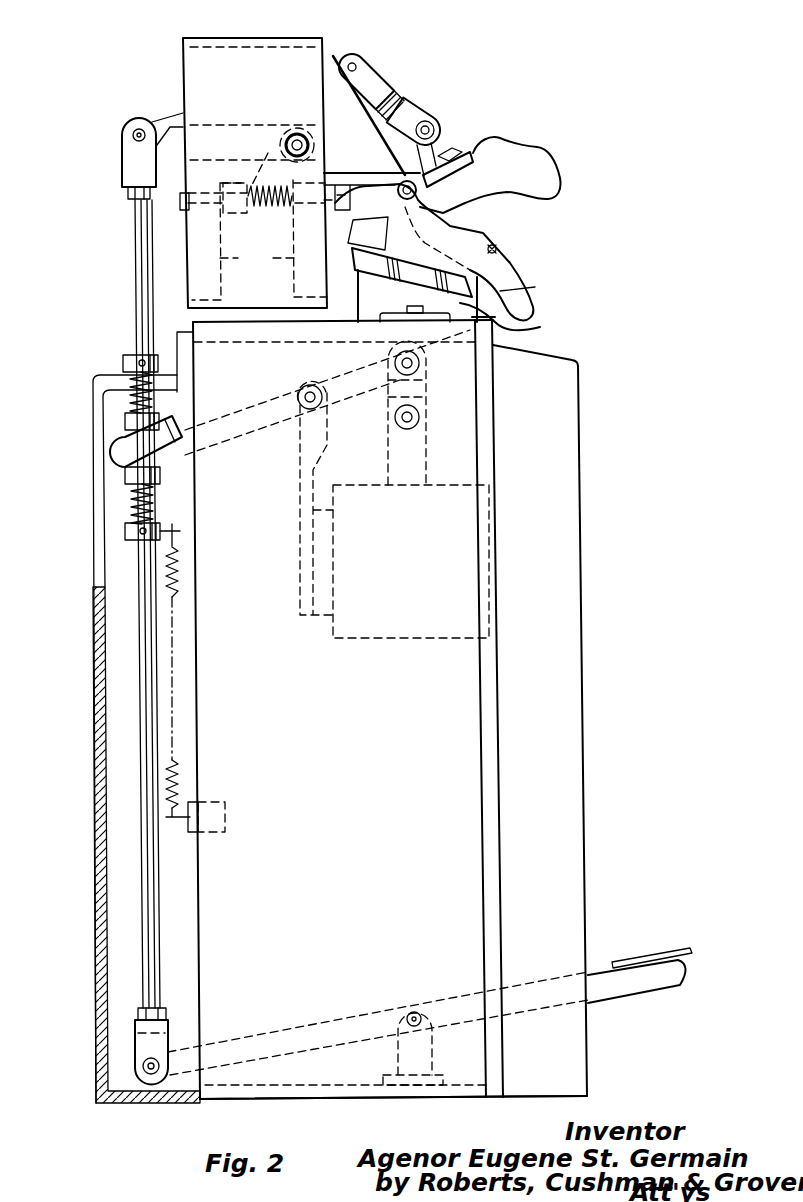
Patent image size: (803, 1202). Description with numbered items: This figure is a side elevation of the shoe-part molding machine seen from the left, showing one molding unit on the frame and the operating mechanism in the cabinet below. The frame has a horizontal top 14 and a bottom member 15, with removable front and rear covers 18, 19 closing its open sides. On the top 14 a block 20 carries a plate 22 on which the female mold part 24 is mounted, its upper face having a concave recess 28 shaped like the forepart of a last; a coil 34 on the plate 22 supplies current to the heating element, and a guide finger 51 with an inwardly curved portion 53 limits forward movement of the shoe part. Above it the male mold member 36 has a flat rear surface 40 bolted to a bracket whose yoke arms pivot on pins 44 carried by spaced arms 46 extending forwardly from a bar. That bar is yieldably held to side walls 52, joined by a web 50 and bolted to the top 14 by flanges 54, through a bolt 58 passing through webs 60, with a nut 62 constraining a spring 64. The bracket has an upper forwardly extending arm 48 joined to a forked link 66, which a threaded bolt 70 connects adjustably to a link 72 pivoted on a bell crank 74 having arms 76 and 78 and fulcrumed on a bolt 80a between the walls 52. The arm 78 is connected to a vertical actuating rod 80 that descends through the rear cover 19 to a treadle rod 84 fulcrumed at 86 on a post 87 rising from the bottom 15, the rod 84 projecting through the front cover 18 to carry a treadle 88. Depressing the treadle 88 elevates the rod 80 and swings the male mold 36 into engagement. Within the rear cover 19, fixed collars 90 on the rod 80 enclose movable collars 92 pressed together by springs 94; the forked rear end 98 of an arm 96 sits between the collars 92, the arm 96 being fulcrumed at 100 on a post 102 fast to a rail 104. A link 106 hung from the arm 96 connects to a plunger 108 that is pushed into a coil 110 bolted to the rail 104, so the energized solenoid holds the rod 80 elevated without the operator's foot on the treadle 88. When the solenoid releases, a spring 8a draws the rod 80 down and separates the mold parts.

The horizontal top 14 is at (193, 328).
The bottom member 15 is at (263, 1097).
The front cover 18 is at (568, 395).
The rear cover 19 is at (95, 657).
The block 20 is at (540, 327).
The plate 22 is at (536, 288).
The female mold part 24 is at (536, 285).
The recess 28 is at (498, 256).
The coil 34 is at (353, 220).
The male mold member 36 is at (518, 148).
The flat rear surface 40 is at (475, 150).
The pins 44 is at (430, 150).
The spaced arms 46 is at (352, 173).
The upper forwardly extending arm 48 is at (403, 181).
The web 50 is at (268, 38).
The guide finger 51 is at (492, 244).
The side walls 52 is at (185, 80).
The inwardly curved portion 53 is at (555, 203).
The flanges 54 is at (243, 318).
The bolt 58 is at (247, 157).
The webs 60 is at (257, 240).
The nut 62 is at (185, 170).
The spring 64 is at (257, 218).
The link 66 is at (420, 108).
The threaded bolt 70 is at (397, 96).
The link 72 is at (372, 57).
The bell crank 74 is at (248, 116).
The arm 76 is at (338, 58).
The arm 78 is at (168, 125).
The actuating rod 80 is at (135, 230).
The bolt 80a is at (307, 95).
The treadle rod 84 is at (272, 1040).
The fulcrum 86 is at (430, 990).
The post 87 is at (385, 1060).
The treadle 88 is at (668, 958).
The spring 8a is at (172, 625).
The fixed collars 90 is at (123, 362).
The movable collars 92 is at (125, 423).
The springs 94 is at (130, 392).
The arm 96 is at (233, 418).
The forked rear end 98 is at (112, 452).
The fulcrum 100 is at (297, 405).
The post 102 is at (300, 470).
The rail 104 is at (318, 625).
The link 106 is at (420, 368).
The plunger 108 is at (428, 432).
The coil 110 is at (411, 561).